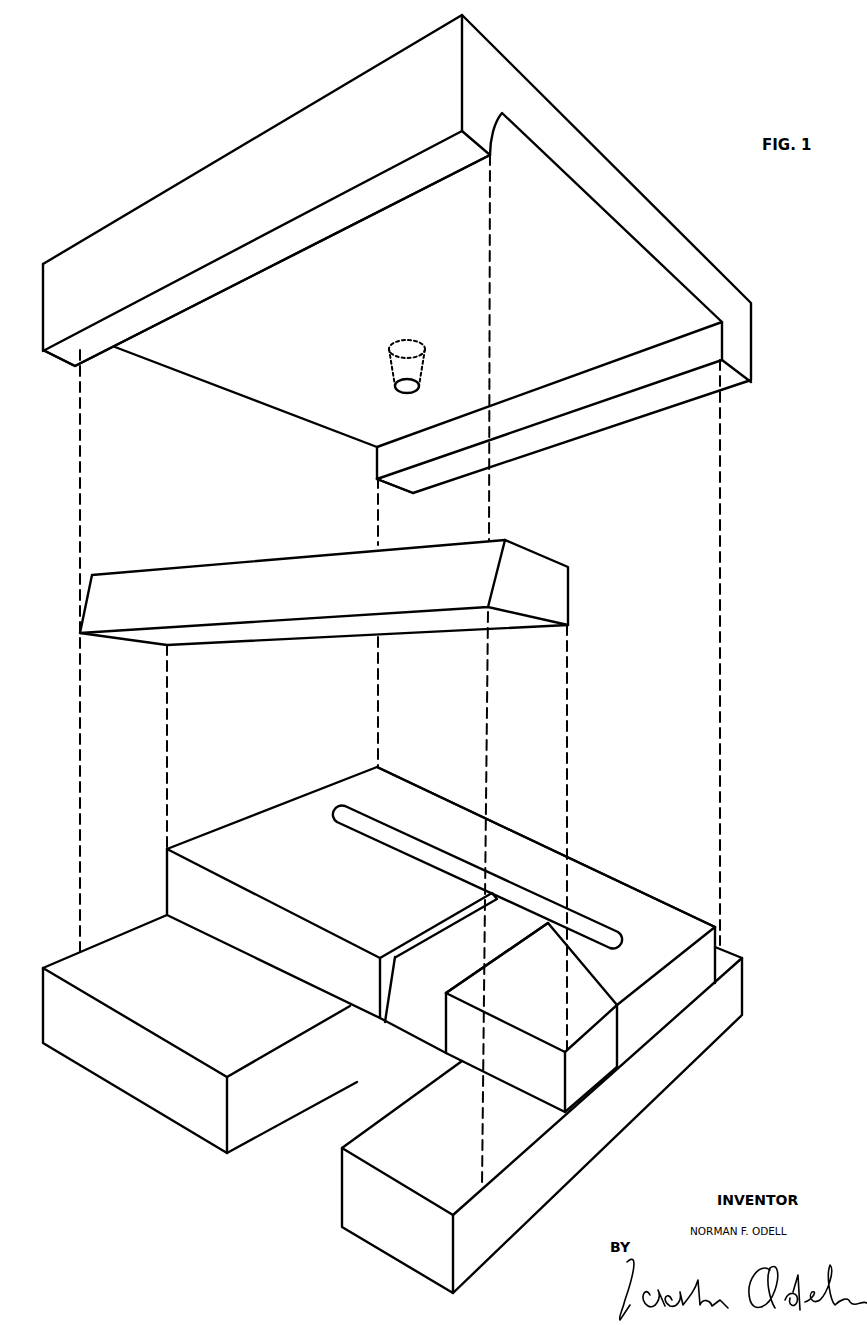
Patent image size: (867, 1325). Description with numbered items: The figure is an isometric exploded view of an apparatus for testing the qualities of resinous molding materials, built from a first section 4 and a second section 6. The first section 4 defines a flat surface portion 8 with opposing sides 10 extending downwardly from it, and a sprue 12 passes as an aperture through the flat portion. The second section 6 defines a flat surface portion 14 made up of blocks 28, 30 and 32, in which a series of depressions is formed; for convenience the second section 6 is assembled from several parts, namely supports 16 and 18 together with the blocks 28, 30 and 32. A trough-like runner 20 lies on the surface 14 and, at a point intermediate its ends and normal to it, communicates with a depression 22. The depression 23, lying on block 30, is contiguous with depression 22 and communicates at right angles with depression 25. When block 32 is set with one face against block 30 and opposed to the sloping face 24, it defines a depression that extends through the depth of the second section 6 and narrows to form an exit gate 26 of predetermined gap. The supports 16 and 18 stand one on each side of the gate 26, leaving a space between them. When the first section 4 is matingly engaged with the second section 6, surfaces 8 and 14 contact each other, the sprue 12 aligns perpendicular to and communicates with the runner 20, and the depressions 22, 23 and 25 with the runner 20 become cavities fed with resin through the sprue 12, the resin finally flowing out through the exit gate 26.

The first section 4 is at (397, 254).
The flat surface portion 8 is at (552, 182).
The opposing sides 10 is at (83, 348).
The sprue 12 is at (393, 378).
The block 32 is at (550, 597).
The second section 6 is at (441, 917).
The flat surface portion 14 is at (282, 817).
The trough-like runner 20 is at (460, 867).
The depression 22 is at (497, 927).
The depression 23 is at (460, 960).
The depression 25 is at (417, 992).
The sloping face 24 is at (403, 998).
The exit gate 26 is at (423, 1040).
The block 28 is at (675, 997).
The block 30 is at (620, 1065).
The support 16 is at (417, 1252).
The support 18 is at (203, 1117).